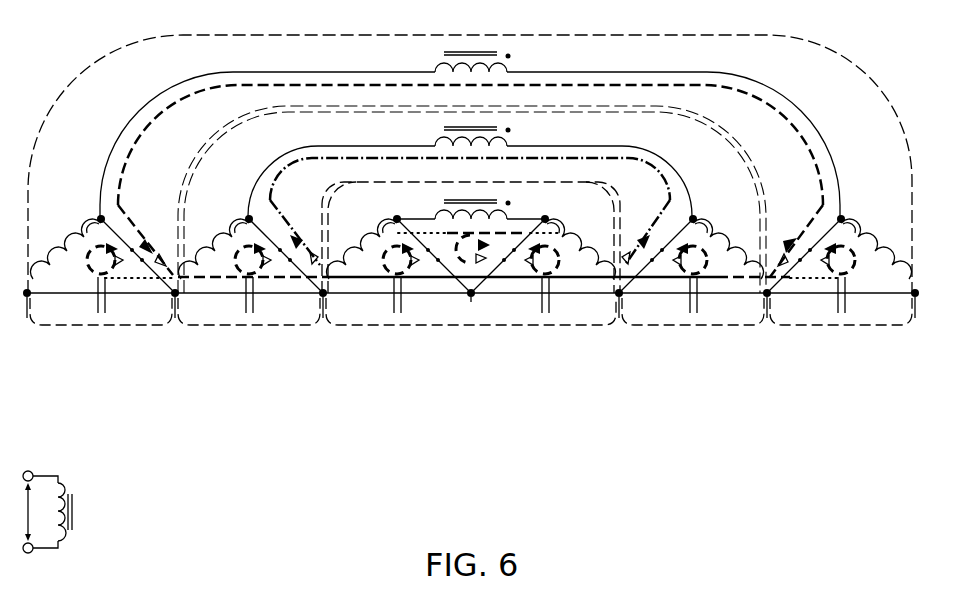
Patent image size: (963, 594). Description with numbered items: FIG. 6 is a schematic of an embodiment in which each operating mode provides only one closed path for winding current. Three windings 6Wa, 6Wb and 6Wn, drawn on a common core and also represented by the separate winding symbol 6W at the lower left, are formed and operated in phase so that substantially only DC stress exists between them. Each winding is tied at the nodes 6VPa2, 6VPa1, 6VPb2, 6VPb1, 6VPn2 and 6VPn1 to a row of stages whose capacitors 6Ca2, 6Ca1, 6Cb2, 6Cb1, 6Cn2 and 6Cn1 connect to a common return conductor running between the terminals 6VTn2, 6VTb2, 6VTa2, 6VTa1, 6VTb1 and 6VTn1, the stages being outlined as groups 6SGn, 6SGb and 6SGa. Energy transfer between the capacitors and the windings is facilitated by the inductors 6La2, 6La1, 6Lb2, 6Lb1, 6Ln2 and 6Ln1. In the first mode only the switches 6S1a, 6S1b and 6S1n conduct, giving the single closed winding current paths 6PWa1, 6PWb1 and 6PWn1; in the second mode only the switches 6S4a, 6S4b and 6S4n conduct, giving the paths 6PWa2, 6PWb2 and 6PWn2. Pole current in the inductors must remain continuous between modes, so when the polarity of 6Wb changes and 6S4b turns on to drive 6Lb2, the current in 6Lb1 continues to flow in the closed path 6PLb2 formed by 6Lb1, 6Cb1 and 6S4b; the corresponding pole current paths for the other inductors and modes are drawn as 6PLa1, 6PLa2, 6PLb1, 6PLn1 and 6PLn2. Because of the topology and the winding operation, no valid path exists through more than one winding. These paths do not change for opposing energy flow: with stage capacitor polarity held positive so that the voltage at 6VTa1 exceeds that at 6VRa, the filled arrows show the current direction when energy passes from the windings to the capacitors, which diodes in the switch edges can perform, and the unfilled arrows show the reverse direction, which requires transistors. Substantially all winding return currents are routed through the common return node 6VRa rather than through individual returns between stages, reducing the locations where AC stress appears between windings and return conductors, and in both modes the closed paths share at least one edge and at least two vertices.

The winding 6Wn is at (439, 60).
The winding 6Wb is at (439, 134).
The winding 6Wa is at (439, 207).
The primary winding 6W is at (47, 512).
The phase node n2 6VPn2 is at (99, 215).
The closed winding current path 6PWn2 is at (97, 222).
The inductor 6Ln2 is at (55, 252).
The closed pole current path 6PLn1 is at (89, 258).
The switch 6S1n is at (128, 259).
The capacitor 6Cn2 is at (106, 300).
The terminal n2 6VTn2 is at (23, 318).
The switching group n 6SGn is at (111, 326).
The phase node b2 6VPb2 is at (247, 215).
The closed winding current path 6PWb2 is at (245, 222).
The inductor 6Lb2 is at (203, 252).
The closed pole current path 6PLb1 is at (237, 258).
The switch 6S1b is at (276, 259).
The capacitor 6Cb2 is at (254, 300).
The terminal b2 6VTb2 is at (173, 318).
The switching group b 6SGb is at (259, 326).
The phase node a2 6VPa2 is at (395, 215).
The closed winding current path 6PWa2 is at (393, 222).
The inductor 6La2 is at (351, 252).
The closed pole current path 6PLa1 is at (385, 258).
The switch 6S1a is at (424, 259).
The capacitor 6Ca2 is at (402, 300).
The terminal a2 6VTa2 is at (320, 318).
The switching group a 6SGa is at (482, 326).
The return node 6VRa is at (469, 302).
The phase node a1 6VPa1 is at (547, 215).
The closed winding current path 6PWa1 is at (549, 222).
The inductor 6La1 is at (591, 252).
The closed pole current path 6PLa2 is at (559, 258).
The switch 6S4a is at (523, 266).
The capacitor 6Ca1 is at (540, 300).
The stage terminal 6VTa1 is at (618, 318).
The phase node b1 6VPb1 is at (695, 215).
The closed winding current path 6PWb1 is at (697, 222).
The inductor 6Lb1 is at (739, 252).
The closed pole current path 6PLb2 is at (707, 258).
The switch 6S4b is at (671, 266).
The capacitor 6Cb1 is at (688, 300).
The terminal b1 6VTb1 is at (767, 318).
The phase node n1 6VPn1 is at (843, 215).
The closed winding current path 6PWn1 is at (845, 222).
The inductor 6Ln1 is at (887, 252).
The closed pole current path 6PLn2 is at (855, 258).
The switch 6S4n is at (819, 266).
The capacitor 6Cn1 is at (836, 300).
The terminal n1 6VTn1 is at (913, 318).